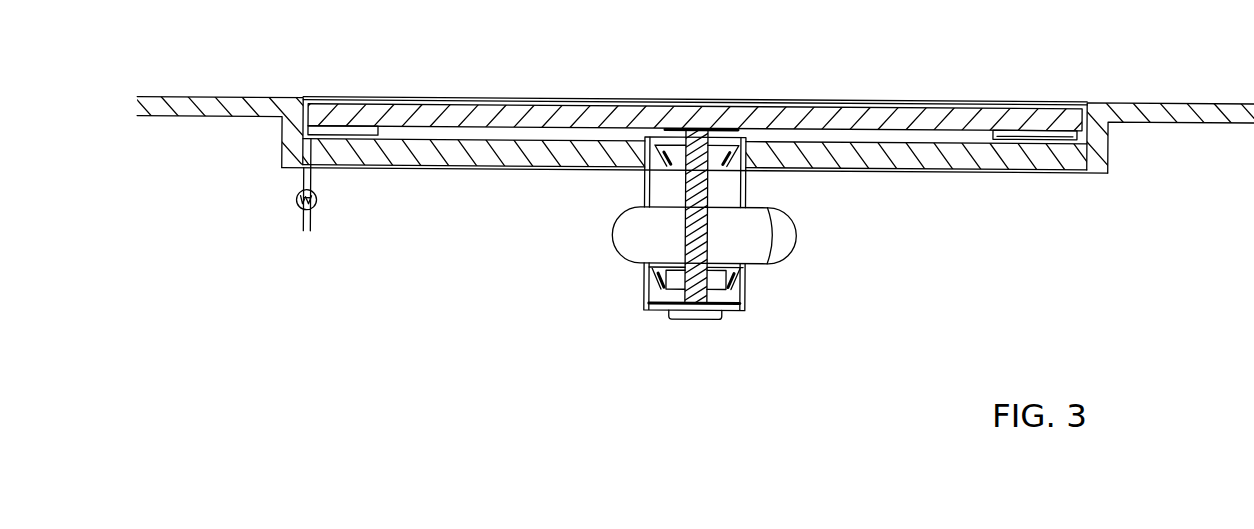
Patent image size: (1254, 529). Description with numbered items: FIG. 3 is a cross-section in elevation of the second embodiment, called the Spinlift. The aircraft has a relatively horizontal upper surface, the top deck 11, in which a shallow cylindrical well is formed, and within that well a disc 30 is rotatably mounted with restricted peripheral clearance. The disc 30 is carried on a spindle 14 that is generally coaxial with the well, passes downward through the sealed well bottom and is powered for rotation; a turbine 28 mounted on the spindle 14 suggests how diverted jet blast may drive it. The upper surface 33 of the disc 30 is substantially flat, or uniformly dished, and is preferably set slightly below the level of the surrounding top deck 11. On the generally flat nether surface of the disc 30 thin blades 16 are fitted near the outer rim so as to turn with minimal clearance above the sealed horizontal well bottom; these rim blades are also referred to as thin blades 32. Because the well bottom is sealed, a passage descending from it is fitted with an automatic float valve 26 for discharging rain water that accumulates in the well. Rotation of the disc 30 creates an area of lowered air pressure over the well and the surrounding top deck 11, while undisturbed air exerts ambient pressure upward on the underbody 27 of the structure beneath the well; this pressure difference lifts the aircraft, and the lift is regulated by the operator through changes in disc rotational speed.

The top deck 11 is at (207, 97).
The spindle 14 is at (700, 185).
The thin blades 16 is at (336, 130).
The automatic float valve 26 is at (296, 206).
The underbody 27 is at (543, 168).
The turbine 28 is at (723, 240).
The disc 30 is at (432, 115).
The thin blades 32 is at (657, 213).
The upper surface of disc 33 is at (605, 100).